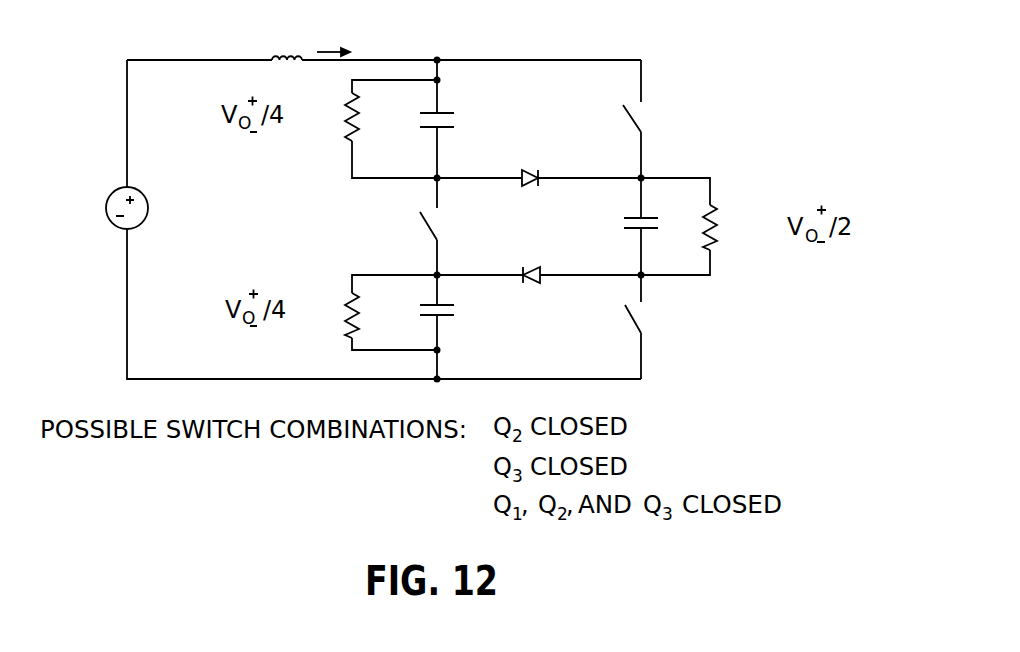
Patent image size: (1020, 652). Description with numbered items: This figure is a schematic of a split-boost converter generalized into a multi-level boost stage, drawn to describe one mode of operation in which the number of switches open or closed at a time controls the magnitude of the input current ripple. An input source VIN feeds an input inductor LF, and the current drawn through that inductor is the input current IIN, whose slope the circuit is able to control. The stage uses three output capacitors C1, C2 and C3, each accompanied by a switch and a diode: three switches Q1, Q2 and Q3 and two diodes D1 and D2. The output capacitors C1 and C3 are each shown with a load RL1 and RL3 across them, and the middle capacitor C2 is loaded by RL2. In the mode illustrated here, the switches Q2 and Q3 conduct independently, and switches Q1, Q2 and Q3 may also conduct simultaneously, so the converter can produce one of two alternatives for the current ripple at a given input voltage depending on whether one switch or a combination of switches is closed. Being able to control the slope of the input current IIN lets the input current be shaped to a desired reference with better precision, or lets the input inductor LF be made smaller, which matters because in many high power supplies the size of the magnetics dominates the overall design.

The input voltage source VIN is at (102, 208).
The filter inductor LF is at (287, 37).
The input current IIN is at (334, 35).
The load resistor 1 RL1 is at (368, 129).
The load resistor 2 RL2 is at (704, 226).
The load resistor 3 RL3 is at (367, 312).
The output capacitor C1 is at (420, 129).
The output capacitor C2 is at (624, 226).
The output capacitor C3 is at (420, 327).
The diode D1 is at (532, 159).
The diode D2 is at (534, 256).
The switch Q1 is at (446, 226).
The switch Q2 is at (652, 119).
The switch Q3 is at (655, 327).